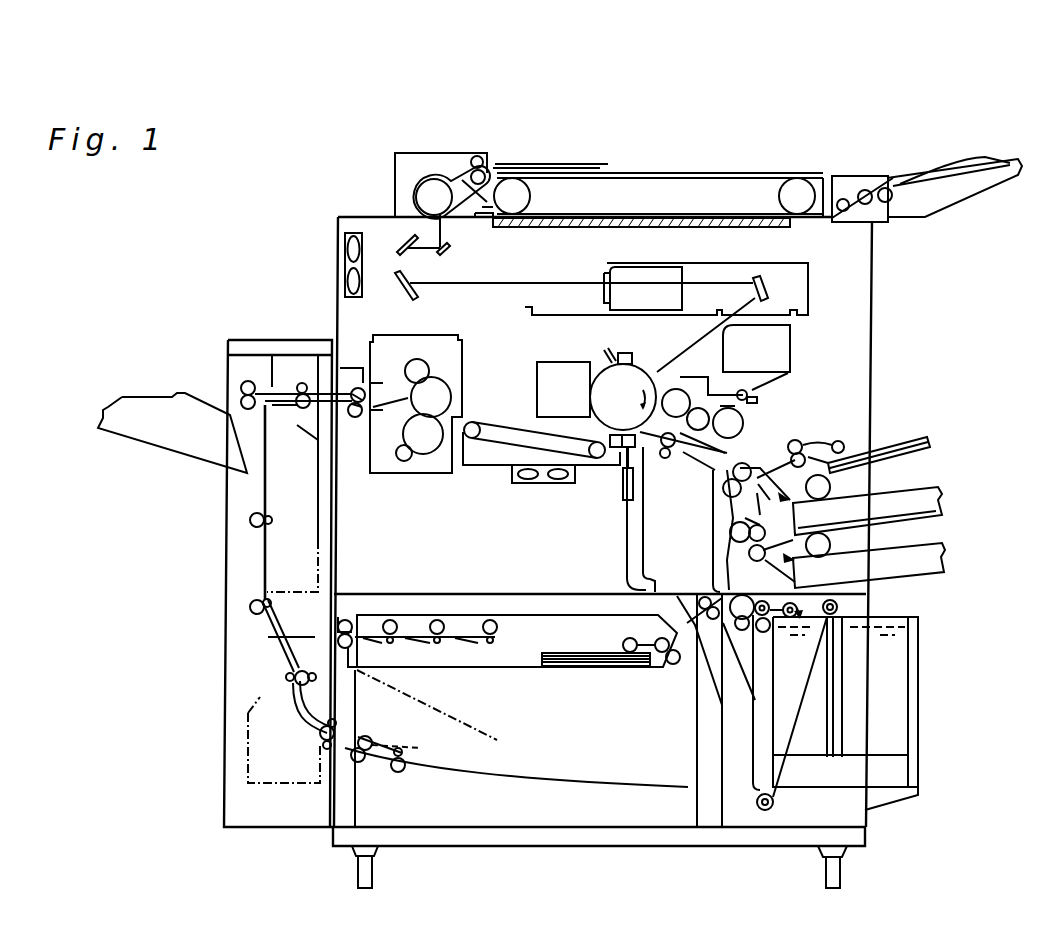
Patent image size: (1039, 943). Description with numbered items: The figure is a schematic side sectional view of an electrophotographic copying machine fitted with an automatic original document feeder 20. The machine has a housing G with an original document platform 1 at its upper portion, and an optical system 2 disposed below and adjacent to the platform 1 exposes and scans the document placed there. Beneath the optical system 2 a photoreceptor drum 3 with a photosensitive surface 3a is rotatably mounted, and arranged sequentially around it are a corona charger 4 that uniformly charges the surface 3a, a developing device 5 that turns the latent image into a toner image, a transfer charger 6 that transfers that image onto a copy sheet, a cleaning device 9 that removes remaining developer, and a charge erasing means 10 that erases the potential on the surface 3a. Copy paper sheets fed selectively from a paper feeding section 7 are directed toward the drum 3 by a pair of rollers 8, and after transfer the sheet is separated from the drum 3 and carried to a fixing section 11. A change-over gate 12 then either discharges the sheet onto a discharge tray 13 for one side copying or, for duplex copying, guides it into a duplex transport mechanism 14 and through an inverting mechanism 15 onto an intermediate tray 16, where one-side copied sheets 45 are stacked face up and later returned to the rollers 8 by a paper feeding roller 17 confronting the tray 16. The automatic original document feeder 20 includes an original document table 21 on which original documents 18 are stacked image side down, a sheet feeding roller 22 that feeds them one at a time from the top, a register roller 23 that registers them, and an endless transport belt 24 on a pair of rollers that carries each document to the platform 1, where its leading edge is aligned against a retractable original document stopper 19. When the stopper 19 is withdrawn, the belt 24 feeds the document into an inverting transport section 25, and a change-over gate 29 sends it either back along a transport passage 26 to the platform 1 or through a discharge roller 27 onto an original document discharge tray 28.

The original document platform 1 is at (718, 212).
The optical system 2 is at (378, 283).
The photoreceptor drum 3 is at (603, 378).
The photosensitive surface 3a is at (657, 372).
The corona charger 4 is at (630, 353).
The developing device 5 is at (700, 388).
The transfer charger 6 is at (617, 442).
The paper feeding section 7 is at (884, 438).
The pair of rollers 8 is at (666, 458).
The cleaning device 9 is at (547, 390).
The charge erasing means 10 is at (610, 352).
The fixing section 11 is at (422, 391).
The change-over gate 12 is at (300, 386).
The discharge tray 13 is at (143, 408).
The duplex transport mechanism 14 is at (252, 655).
The inverting mechanism 15 is at (348, 762).
The intermediate tray 16 is at (520, 667).
The paper feeding roller 17 is at (631, 652).
The original documents 18 is at (594, 165).
The original document stopper 19 is at (490, 216).
The automatic original document feeder 20 is at (377, 191).
The original document table 21 is at (960, 192).
The sheet feeding roller 22 is at (865, 191).
The register roller 23 is at (841, 198).
The endless transport belt 24 is at (680, 180).
The inverting transport section 25 is at (434, 196).
The transport passage 26 is at (493, 182).
The discharge roller 27 is at (478, 157).
The original document discharge tray 28 is at (637, 173).
The change-over gate 29 is at (456, 173).
The copy paper sheets 45 is at (585, 668).
The housing G is at (873, 316).